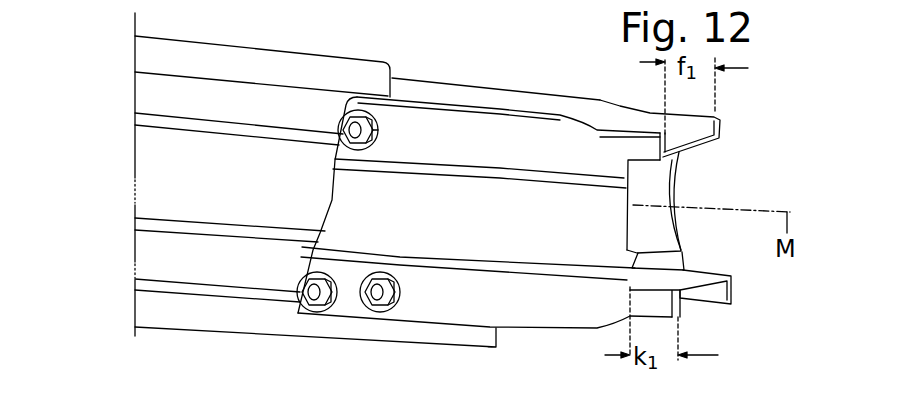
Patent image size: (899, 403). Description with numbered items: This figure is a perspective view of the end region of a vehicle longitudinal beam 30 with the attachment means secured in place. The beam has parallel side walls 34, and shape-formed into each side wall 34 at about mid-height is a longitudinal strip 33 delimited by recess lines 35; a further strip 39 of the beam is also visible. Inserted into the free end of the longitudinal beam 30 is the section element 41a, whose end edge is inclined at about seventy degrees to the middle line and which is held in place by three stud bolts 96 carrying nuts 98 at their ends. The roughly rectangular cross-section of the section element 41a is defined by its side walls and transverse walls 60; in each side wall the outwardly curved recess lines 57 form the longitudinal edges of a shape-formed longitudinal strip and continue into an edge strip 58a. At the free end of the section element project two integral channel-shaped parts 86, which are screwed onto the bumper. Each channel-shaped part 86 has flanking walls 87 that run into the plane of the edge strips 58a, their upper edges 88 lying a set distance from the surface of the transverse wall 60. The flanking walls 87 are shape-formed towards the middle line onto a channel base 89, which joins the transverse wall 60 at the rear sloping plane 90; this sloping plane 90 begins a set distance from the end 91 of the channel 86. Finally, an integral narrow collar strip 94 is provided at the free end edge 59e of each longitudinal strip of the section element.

The longitudinal beam 30 is at (208, 292).
The longitudinal strip 33 is at (160, 175).
The side wall 34 is at (150, 284).
The recess line 35 is at (197, 62).
The rail strip 39 is at (88, 270).
The section element 41a is at (530, 55).
The recess line 57 is at (410, 168).
The edge strip 58a is at (497, 152).
The free end edge 59e is at (626, 218).
The transverse wall 60 is at (523, 97).
The channel-shaped part 86 is at (717, 118).
The flanking wall 87 is at (660, 151).
The upper edge 88 is at (628, 130).
The channel base 89 is at (697, 153).
The rear sloping plane 90 is at (602, 110).
The end of the channel 91 is at (723, 137).
The collar strip 94 is at (682, 197).
The stud bolt 96 is at (370, 308).
The nut 98 is at (362, 128).